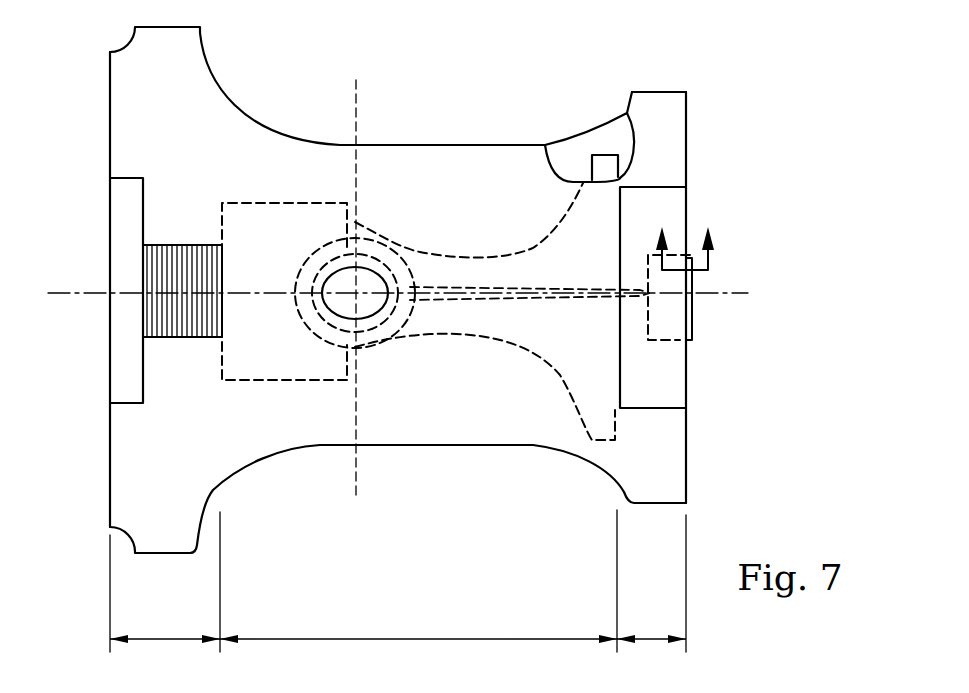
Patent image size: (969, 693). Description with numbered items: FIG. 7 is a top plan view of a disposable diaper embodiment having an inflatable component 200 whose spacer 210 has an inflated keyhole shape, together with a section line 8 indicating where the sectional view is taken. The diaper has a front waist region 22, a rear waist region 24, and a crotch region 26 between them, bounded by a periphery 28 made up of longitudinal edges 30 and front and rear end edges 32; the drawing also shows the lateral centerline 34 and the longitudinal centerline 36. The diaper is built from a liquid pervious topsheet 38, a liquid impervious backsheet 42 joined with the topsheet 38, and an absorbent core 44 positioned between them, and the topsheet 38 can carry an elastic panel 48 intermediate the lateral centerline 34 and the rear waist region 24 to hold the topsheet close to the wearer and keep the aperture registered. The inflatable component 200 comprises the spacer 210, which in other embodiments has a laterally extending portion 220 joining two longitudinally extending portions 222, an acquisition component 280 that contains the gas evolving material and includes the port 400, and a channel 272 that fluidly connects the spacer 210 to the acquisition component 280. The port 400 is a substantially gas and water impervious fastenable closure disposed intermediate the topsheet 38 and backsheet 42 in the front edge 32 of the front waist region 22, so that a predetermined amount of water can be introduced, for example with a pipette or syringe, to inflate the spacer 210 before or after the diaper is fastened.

The section line 8- 8 is at (684, 233).
The front waist region 22 is at (648, 639).
The rear waist region 24 is at (163, 639).
The crotch region 26 is at (418, 639).
The periphery 28 is at (210, 67).
The longitudinal edges 30 is at (410, 143).
The front and rear end edges 32 is at (110, 82).
The lateral centerline 34 is at (357, 80).
The longitudinal centerline 36 is at (62, 291).
The topsheet 38 is at (523, 167).
The backsheet 42 is at (617, 130).
The absorbent core 44 is at (602, 168).
The elastic panel 48 is at (163, 245).
The inflatable component 200 is at (417, 277).
The inflatable spacer 210 is at (380, 337).
The laterally extending portion 220 is at (452, 335).
The longitudinally extending portions 222 is at (347, 247).
The channel 272 is at (533, 303).
The acquisition component 280 is at (680, 345).
The port 400 is at (704, 315).